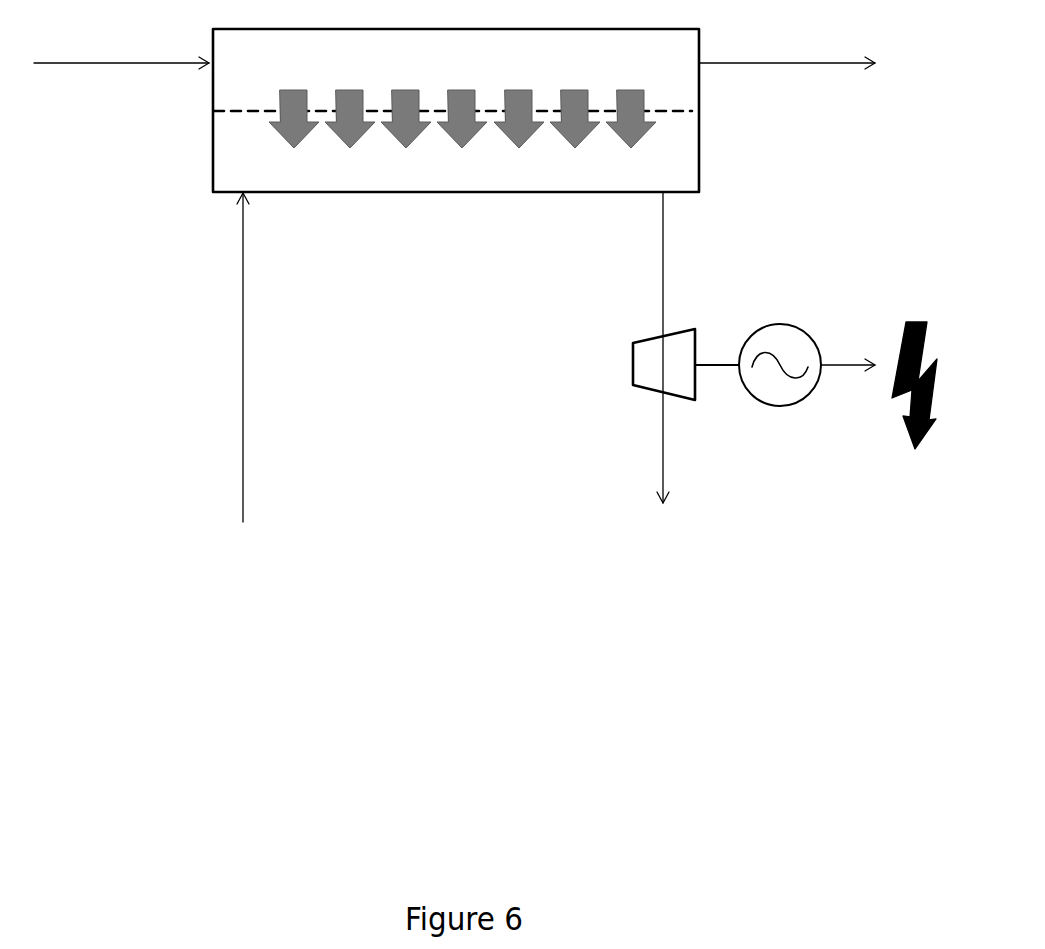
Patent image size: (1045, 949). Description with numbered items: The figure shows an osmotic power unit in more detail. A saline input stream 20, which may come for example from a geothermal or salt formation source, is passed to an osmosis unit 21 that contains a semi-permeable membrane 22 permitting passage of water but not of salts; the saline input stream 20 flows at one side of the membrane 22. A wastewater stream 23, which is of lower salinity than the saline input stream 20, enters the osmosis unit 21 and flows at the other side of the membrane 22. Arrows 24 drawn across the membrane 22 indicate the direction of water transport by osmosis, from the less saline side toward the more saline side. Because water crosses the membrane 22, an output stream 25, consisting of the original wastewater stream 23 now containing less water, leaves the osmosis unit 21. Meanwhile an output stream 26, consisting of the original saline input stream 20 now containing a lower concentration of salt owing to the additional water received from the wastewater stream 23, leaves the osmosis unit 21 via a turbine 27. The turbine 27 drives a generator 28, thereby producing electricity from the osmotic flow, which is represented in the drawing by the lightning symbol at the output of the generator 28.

The saline input stream 20 is at (222, 357).
The osmosis unit 21 is at (617, 200).
The semi-permeable membrane 22 is at (238, 118).
The wastewater stream 23 is at (121, 42).
The arrows 24 is at (423, 152).
The output stream 25 is at (787, 47).
The output stream 26 is at (689, 347).
The turbine 27 is at (615, 370).
The generator 28 is at (788, 430).